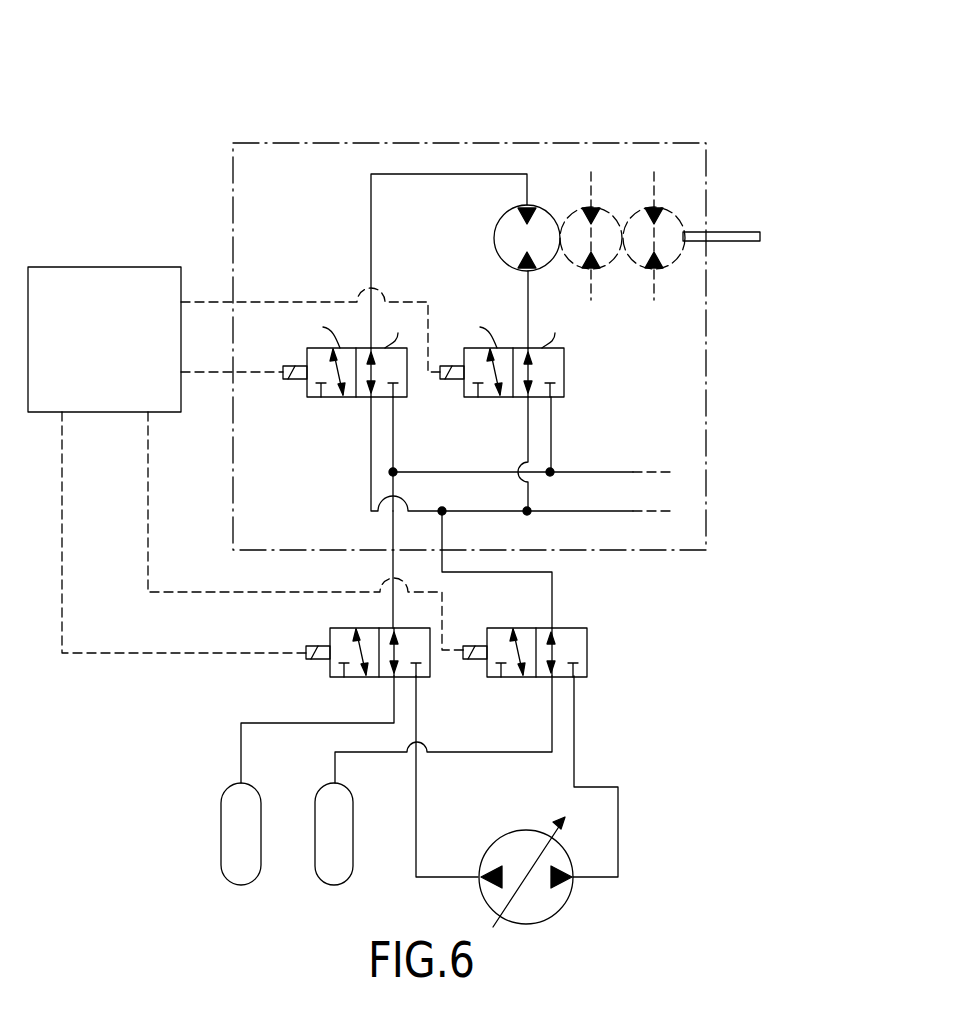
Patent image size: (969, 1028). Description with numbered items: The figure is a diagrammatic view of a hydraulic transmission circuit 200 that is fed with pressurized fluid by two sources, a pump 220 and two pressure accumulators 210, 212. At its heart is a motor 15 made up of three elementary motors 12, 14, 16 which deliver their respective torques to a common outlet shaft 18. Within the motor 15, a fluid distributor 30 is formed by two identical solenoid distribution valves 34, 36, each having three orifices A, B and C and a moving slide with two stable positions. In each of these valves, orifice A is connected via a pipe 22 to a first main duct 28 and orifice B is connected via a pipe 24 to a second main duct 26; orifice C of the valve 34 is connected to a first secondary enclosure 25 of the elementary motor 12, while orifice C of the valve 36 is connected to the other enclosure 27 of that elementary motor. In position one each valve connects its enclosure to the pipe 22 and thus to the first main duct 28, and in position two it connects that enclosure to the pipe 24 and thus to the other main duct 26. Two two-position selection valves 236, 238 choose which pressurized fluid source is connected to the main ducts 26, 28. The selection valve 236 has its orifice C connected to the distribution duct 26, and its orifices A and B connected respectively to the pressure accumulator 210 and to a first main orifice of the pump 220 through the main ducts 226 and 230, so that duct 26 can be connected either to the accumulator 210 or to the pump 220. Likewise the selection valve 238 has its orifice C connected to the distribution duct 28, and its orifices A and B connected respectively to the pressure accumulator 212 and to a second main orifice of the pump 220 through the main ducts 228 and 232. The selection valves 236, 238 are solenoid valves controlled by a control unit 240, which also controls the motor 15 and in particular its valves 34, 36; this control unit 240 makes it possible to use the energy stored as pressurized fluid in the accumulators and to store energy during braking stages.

The hydraulic transmission circuit 200 is at (213, 76).
The motor 15 is at (706, 415).
The elementary motor 12 is at (497, 238).
The elementary motor 14 is at (604, 216).
The elementary motor 16 is at (668, 216).
The outlet shaft 18 is at (740, 232).
The pipe 22 is at (371, 472).
The pipe 24 is at (394, 450).
The first secondary enclosure 25 is at (371, 190).
The second main duct 26 is at (393, 525).
The enclosure 27 is at (528, 300).
The first main duct 28 is at (442, 525).
The fluid distributor 30 is at (558, 424).
The distribution valve 34 is at (325, 398).
The distribution valve 36 is at (470, 398).
The pressure accumulator 210 is at (229, 855).
The pressure accumulator 212 is at (322, 853).
The pump 220 is at (556, 904).
The main duct 226 is at (241, 752).
The main duct 228 is at (335, 760).
The main duct 230 is at (418, 806).
The main duct 232 is at (576, 743).
The selection valve 236 is at (335, 679).
The selection valve 238 is at (589, 645).
The control unit 240 is at (246, 460).